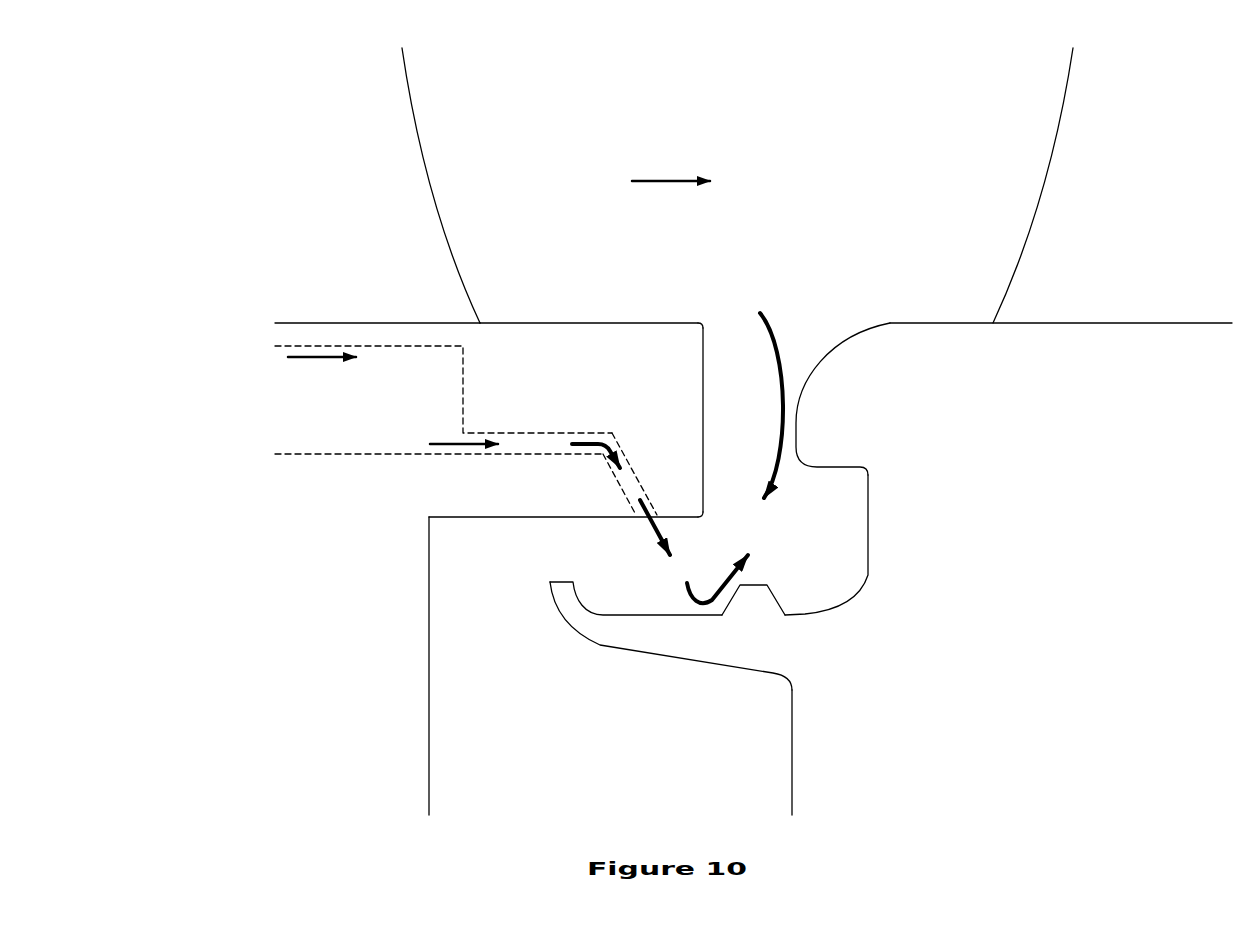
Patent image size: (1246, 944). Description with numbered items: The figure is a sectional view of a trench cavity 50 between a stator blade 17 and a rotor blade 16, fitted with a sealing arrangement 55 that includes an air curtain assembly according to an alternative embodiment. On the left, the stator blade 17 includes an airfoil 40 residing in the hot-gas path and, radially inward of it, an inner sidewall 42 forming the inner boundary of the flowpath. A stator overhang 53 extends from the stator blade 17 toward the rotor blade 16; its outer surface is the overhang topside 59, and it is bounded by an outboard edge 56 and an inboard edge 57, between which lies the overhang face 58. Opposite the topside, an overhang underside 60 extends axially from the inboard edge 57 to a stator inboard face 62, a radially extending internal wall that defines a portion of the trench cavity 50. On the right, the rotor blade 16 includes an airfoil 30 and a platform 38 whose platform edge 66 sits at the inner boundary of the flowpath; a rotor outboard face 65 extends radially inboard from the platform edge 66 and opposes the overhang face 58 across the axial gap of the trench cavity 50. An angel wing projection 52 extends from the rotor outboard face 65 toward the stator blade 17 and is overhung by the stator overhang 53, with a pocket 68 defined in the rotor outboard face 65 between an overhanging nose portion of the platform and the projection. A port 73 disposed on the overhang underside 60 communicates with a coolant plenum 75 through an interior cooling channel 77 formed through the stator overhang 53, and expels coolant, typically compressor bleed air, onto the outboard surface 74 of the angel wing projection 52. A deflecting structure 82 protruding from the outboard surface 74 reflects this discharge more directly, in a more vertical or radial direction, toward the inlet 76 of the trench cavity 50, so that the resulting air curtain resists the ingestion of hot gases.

The rotor blade 16 is at (1189, 230).
The stator blade 17 is at (290, 210).
The airfoil 30 is at (1126, 216).
The platform 38 is at (1043, 323).
The airfoil 40 is at (386, 203).
The inner sidewall 42 is at (368, 323).
The trench cavity 50 is at (753, 396).
The angel wing projection 52 is at (688, 648).
The stator overhang 53 is at (599, 423).
The sealing arrangement 55 is at (844, 412).
The outboard edge 56 is at (703, 323).
The inboard edge 57 is at (703, 507).
The overhang face 58 is at (703, 415).
The overhang topside 59 is at (570, 323).
The overhang underside 60 is at (488, 517).
The stator inboard face 62 is at (429, 728).
The rotor outboard face 65 is at (934, 522).
The platform edge 66 is at (835, 347).
The pocket 68 is at (854, 538).
The port 73 is at (647, 518).
The outboard surface 74 is at (648, 613).
The coolant plenum 75 is at (411, 426).
The inlet 76 is at (753, 348).
The interior cooling channel 77 is at (628, 453).
The deflecting structure 82 is at (768, 612).